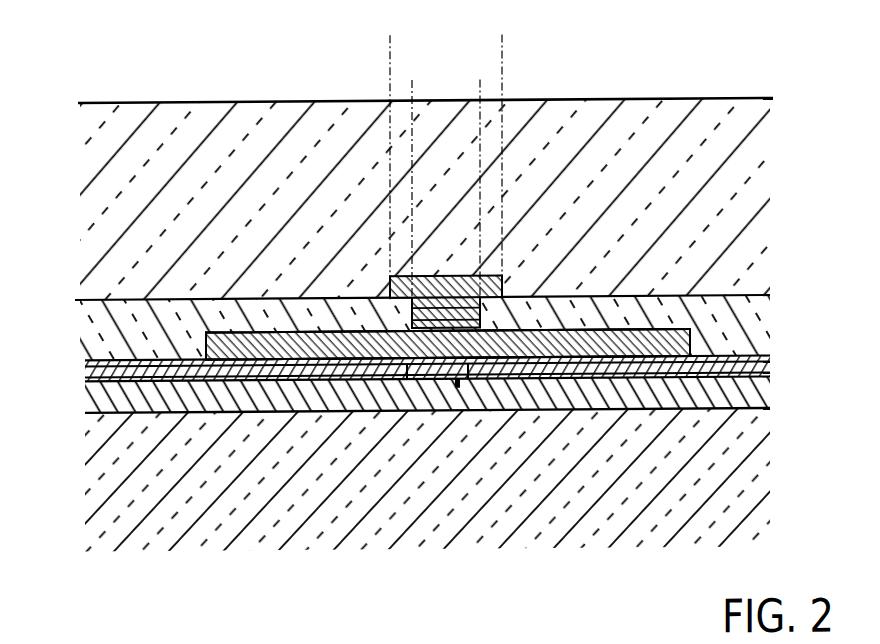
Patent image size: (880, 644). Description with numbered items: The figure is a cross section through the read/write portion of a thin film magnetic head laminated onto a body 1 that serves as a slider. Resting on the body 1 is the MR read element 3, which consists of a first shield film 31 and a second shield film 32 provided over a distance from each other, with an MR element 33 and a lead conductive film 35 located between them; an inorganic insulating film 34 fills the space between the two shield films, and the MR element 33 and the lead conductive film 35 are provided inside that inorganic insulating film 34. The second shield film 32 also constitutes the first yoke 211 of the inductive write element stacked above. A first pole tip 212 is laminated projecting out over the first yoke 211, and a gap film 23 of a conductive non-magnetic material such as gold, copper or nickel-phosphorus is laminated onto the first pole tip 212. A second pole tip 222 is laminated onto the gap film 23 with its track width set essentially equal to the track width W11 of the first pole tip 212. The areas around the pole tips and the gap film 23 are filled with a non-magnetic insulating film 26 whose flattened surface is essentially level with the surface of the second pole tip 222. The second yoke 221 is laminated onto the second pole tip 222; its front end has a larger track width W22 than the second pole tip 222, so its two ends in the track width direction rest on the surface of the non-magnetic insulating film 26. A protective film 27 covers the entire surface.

The body 1 is at (85, 477).
The MR read element 3 is at (458, 386).
The gap film 23 is at (412, 313).
The non-magnetic insulating film 26 is at (105, 331).
The protective film 27 is at (105, 220).
The first shield film 31 is at (242, 404).
The second shield film 32 is at (448, 344).
The MR element 33 is at (427, 368).
The inorganic insulating film 34 is at (113, 381).
The lead conductive film 35 is at (102, 367).
The first yoke 211 is at (605, 343).
The first pole tip 212 is at (481, 310).
The second yoke 221 is at (390, 292).
The second pole tip 222 is at (480, 300).
The track width of the first pole tip W11 is at (480, 87).
The track width of the second yoke front end W22 is at (502, 43).